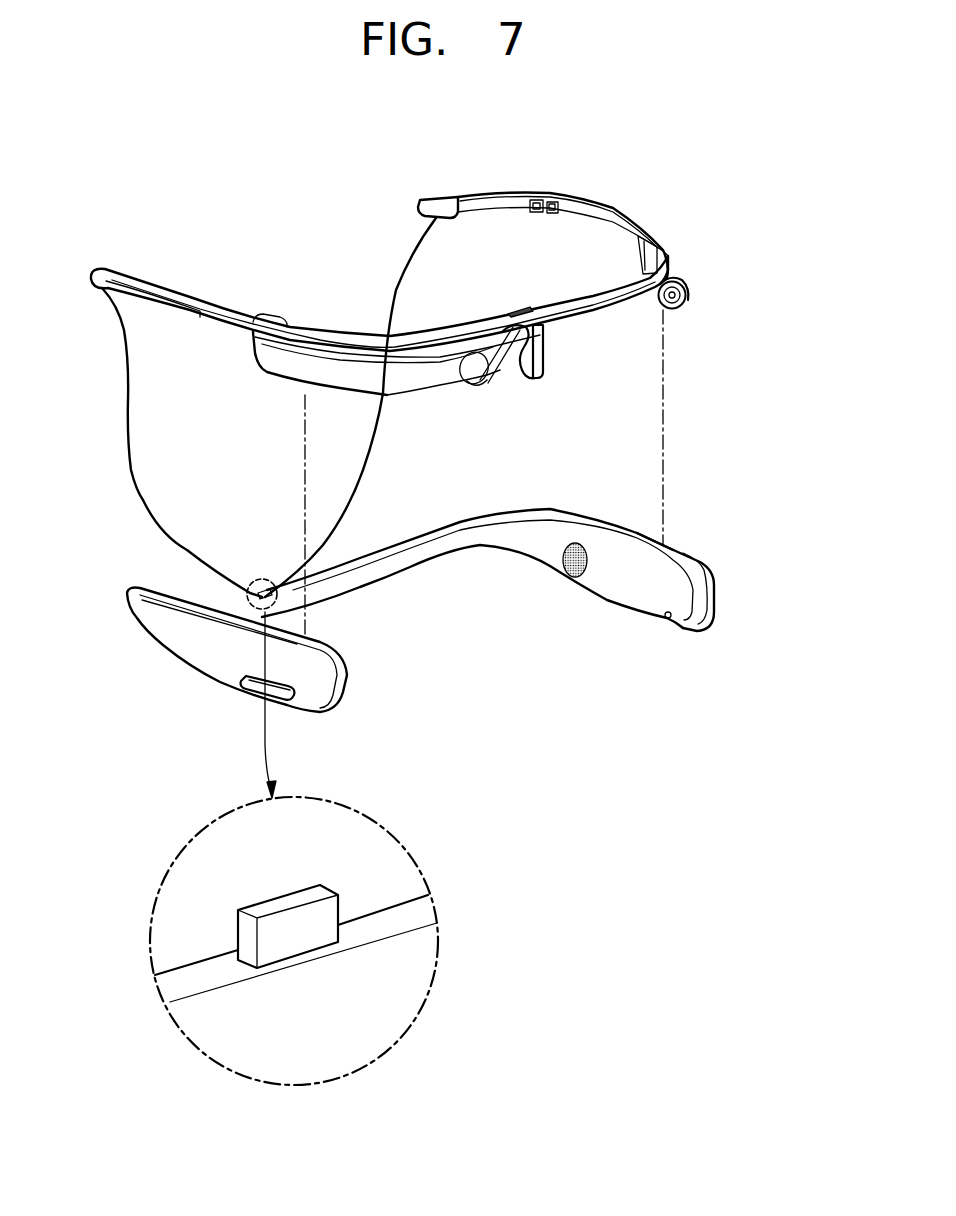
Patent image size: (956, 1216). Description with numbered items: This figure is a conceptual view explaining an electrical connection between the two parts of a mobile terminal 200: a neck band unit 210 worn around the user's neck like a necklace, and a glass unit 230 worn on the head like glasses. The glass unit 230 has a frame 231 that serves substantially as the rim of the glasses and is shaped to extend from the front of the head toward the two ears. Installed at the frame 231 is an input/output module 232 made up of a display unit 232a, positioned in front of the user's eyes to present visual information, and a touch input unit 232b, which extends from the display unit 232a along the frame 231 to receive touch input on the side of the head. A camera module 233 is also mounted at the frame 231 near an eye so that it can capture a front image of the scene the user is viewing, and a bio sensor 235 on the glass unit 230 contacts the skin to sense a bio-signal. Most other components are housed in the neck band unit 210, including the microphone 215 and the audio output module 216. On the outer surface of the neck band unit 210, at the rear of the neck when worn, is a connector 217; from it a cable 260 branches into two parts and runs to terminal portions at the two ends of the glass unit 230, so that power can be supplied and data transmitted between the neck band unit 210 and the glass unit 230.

The mobile terminal 200 is at (809, 195).
The neck band unit 210 is at (446, 795).
The microphone 215 is at (665, 618).
The audio output module 216 is at (573, 568).
The connector 217 is at (263, 933).
The glass unit 230 is at (449, 319).
The frame 231 is at (573, 308).
The input/output module 232 is at (398, 413).
The display unit 232a is at (450, 383).
The touch input unit 232b is at (377, 387).
The camera module 233 is at (685, 308).
The bio sensor 235 is at (557, 200).
The cable 260 is at (129, 474).